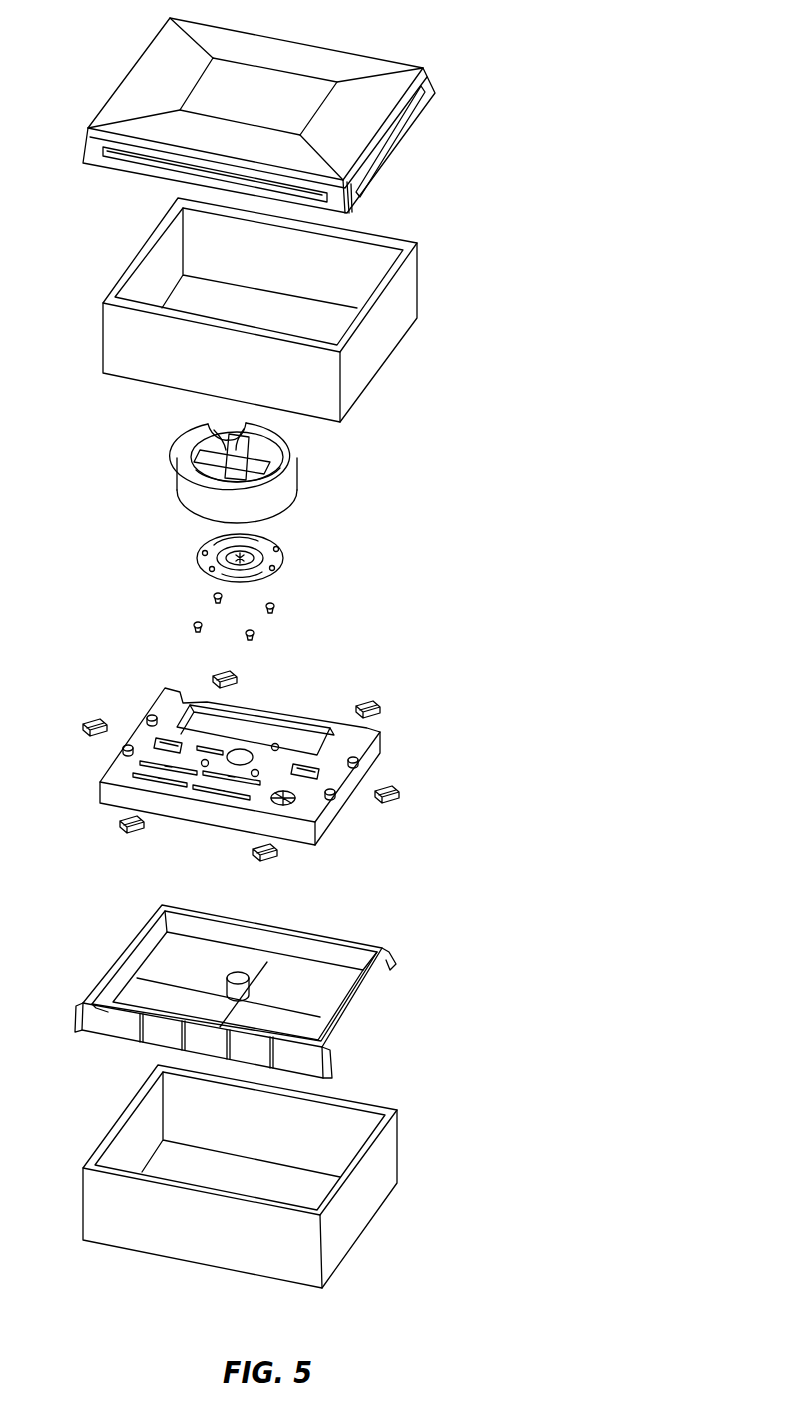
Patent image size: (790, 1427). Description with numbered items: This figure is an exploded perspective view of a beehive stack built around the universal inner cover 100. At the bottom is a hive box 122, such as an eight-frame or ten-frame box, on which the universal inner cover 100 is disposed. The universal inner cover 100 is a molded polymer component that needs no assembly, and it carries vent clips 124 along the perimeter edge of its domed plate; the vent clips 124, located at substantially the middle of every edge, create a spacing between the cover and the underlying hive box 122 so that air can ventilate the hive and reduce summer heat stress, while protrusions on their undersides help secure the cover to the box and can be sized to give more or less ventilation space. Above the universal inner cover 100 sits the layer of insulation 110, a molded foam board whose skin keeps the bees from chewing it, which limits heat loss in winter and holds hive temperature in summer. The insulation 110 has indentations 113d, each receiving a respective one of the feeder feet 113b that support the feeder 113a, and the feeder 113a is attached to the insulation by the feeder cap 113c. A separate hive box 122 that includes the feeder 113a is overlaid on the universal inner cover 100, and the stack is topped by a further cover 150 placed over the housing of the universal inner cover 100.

The universal inner cover 100 is at (406, 1019).
The layer of insulation 110 is at (345, 829).
The feeder 113a is at (187, 490).
The feeder feet 113b is at (195, 625).
The feeder cap 113c is at (200, 562).
The indentation 113d is at (207, 761).
The hive box 122 is at (372, 330).
The vent clips 124 is at (215, 675).
The cover 150 is at (358, 70).